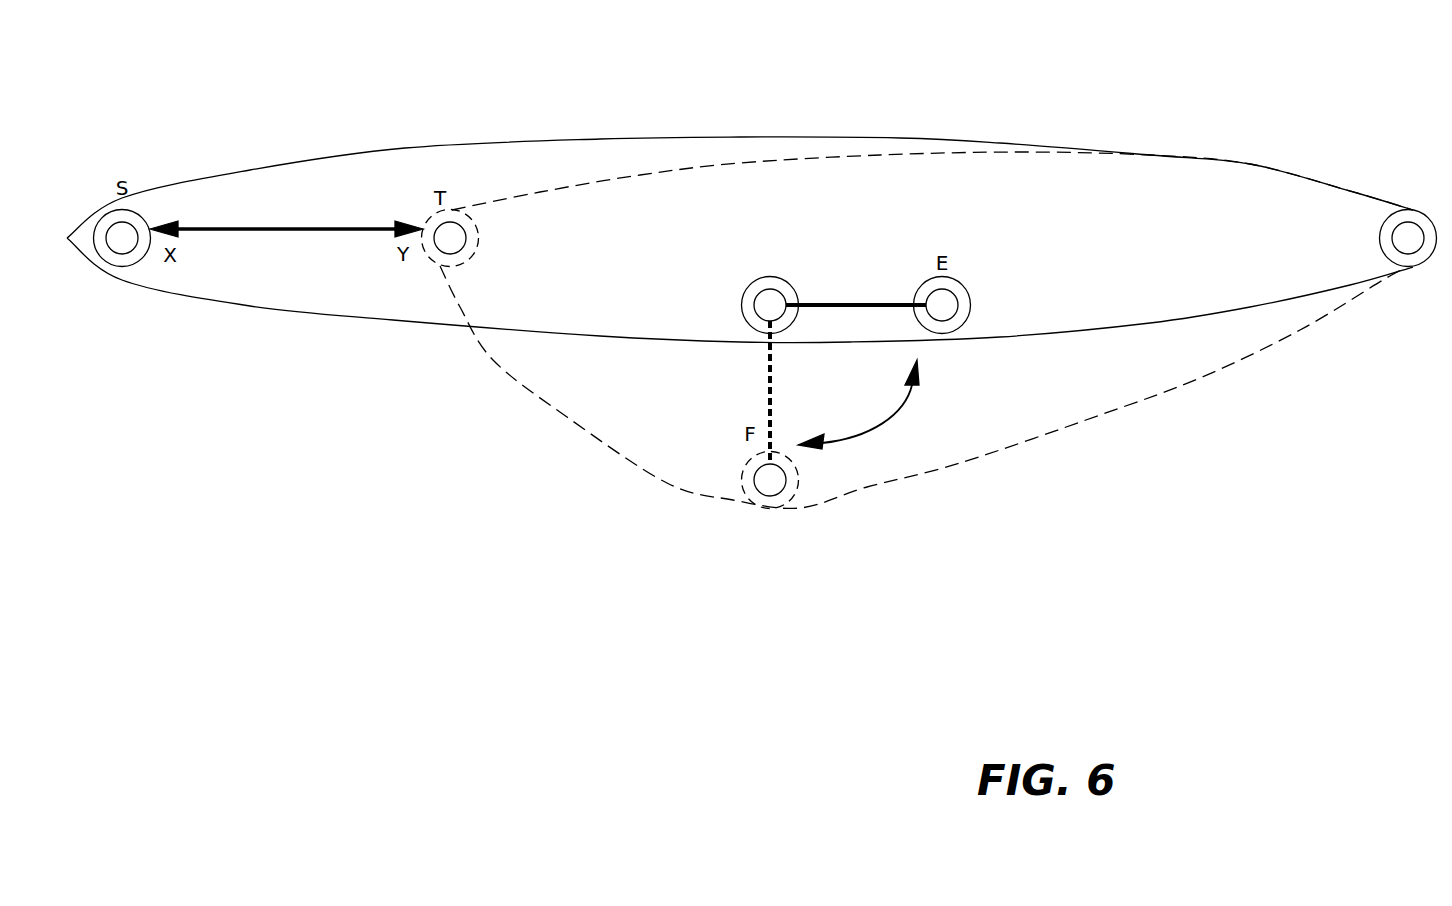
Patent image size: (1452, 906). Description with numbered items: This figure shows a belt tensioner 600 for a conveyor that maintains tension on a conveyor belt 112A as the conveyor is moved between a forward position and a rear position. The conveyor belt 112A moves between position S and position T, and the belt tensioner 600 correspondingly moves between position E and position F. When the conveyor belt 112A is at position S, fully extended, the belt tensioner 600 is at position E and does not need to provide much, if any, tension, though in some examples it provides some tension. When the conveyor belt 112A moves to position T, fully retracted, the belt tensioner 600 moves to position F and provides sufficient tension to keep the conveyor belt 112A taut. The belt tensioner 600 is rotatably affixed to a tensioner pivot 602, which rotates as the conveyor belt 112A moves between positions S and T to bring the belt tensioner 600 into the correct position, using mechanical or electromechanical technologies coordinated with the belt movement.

The conveyor belt 112A is at (405, 148).
The belt tensioner 600 is at (870, 303).
The tensioner pivot 602 is at (767, 277).